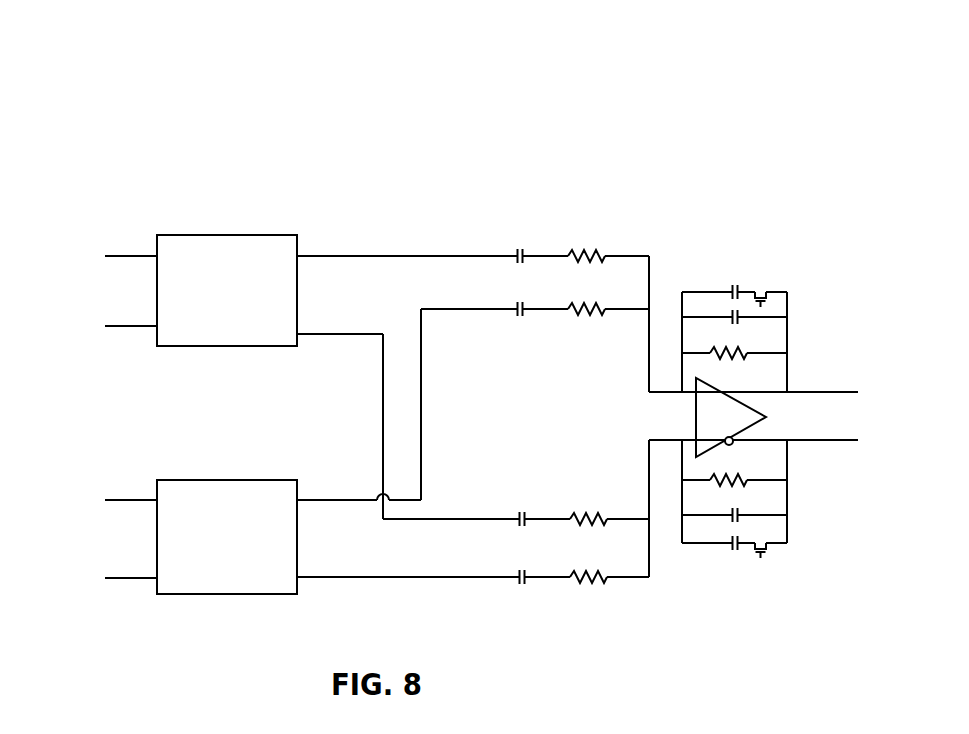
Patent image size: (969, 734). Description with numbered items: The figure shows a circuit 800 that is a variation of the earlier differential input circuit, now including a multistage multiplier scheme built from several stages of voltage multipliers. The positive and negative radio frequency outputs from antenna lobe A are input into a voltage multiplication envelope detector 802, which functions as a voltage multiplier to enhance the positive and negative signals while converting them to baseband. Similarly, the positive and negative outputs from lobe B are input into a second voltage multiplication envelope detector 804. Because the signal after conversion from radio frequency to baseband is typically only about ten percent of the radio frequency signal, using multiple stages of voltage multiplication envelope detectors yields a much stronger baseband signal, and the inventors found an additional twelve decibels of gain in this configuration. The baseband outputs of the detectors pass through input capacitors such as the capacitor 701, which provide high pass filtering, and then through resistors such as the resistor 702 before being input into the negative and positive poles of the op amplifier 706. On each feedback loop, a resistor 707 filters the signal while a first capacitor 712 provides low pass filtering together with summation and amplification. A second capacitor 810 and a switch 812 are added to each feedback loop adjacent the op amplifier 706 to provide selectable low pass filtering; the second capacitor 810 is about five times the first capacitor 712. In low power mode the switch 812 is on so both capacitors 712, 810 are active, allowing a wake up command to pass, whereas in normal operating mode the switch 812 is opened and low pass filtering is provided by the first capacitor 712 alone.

The circuit 800 is at (262, 146).
The voltage multiplication envelope detector 802 is at (209, 235).
The second voltage multiplication envelope detector 804 is at (209, 480).
The capacitor 701 is at (525, 258).
The resistor 702 is at (585, 257).
The op amplifier 706 is at (763, 410).
The resistor 707 is at (728, 350).
The capacitor 712 is at (740, 320).
The second capacitor 810 is at (741, 291).
The switch 812 is at (768, 296).